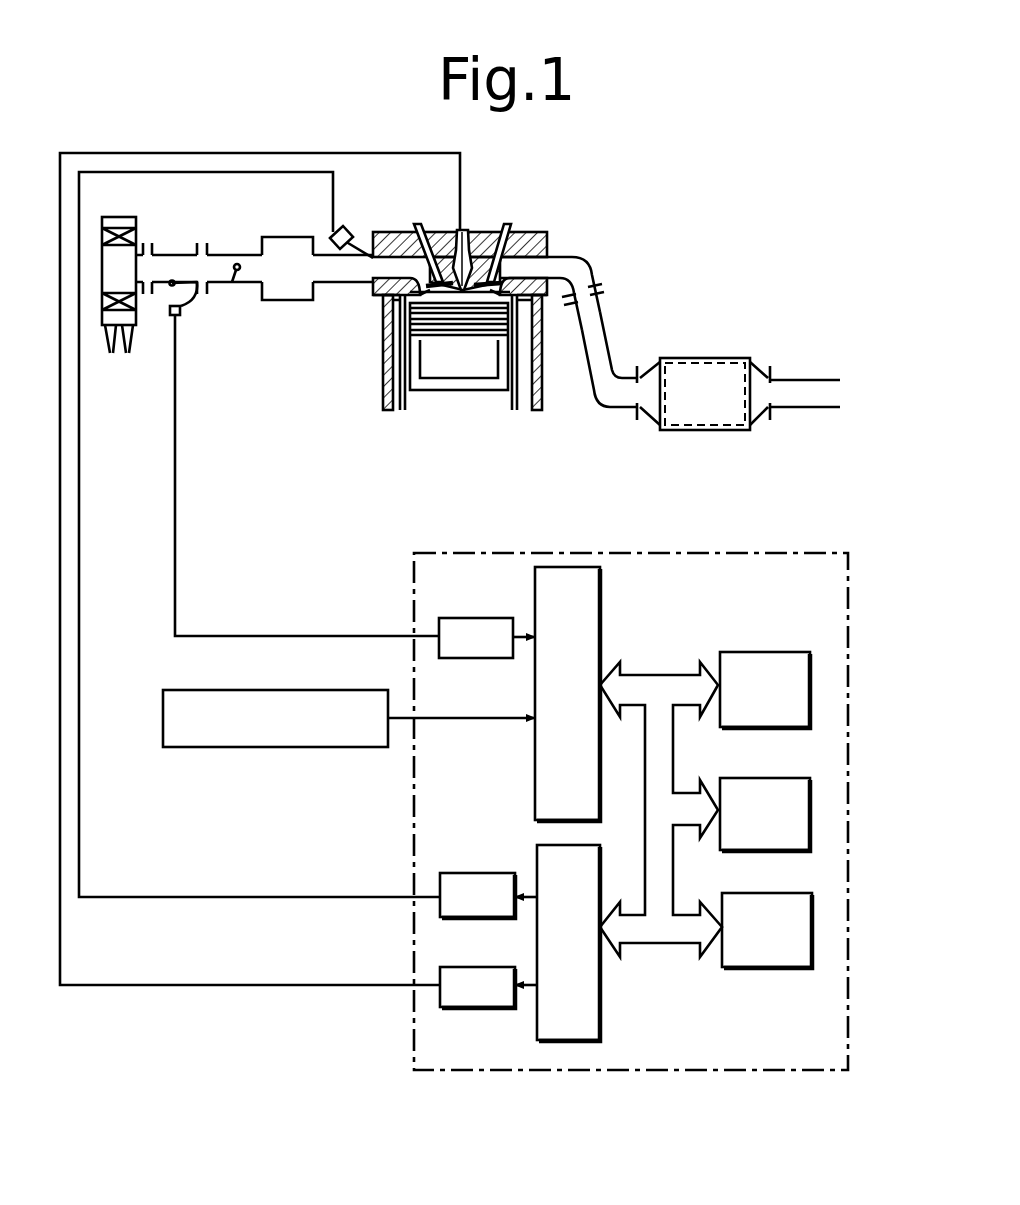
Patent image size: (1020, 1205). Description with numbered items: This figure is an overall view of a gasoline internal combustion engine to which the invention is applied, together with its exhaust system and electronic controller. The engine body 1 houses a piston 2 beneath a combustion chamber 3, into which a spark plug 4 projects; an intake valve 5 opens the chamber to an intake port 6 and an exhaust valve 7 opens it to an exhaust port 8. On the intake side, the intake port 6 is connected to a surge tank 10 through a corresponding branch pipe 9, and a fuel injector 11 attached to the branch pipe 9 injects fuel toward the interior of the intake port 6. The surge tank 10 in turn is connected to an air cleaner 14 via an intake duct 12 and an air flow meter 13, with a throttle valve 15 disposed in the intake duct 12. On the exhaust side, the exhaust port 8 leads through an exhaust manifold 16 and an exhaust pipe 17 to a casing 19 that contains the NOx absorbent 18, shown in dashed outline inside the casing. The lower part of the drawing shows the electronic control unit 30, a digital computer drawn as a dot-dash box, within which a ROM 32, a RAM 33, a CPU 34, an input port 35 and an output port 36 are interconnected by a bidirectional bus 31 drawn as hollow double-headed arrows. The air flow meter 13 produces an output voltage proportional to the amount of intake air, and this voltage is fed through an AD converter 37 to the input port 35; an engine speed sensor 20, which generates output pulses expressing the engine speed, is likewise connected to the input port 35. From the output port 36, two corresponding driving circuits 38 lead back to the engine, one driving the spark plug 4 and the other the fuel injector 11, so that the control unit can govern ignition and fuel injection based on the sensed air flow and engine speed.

The engine body 1 is at (546, 386).
The piston 2 is at (482, 360).
The combustion chamber 3 is at (456, 302).
The spark plug 4 is at (466, 232).
The intake valve 5 is at (417, 226).
The intake port 6 is at (390, 232).
The exhaust valve 7 is at (508, 226).
The exhaust port 8 is at (547, 242).
The branch pipe 9 is at (340, 284).
The surge tank 10 is at (285, 300).
The fuel injector 11 is at (342, 234).
The intake duct 12 is at (213, 253).
The air flow meter 13 is at (176, 258).
The air cleaner 14 is at (116, 217).
The throttle valve 15 is at (240, 263).
The exhaust manifold 16 is at (588, 266).
The exhaust pipe 17 is at (604, 316).
The NOx absorbent 18 is at (678, 357).
The casing 19 is at (752, 357).
The engine speed sensor 20 is at (176, 690).
The electronic control unit 30 is at (822, 550).
The bidirectional bus 31 is at (658, 672).
The ROM 32 is at (786, 652).
The RAM 33 is at (796, 778).
The CPU 34 is at (788, 893).
The input port 35 is at (600, 583).
The output port 36 is at (600, 1020).
The AD converter 37 is at (439, 626).
The driving circuit 38 is at (440, 891).